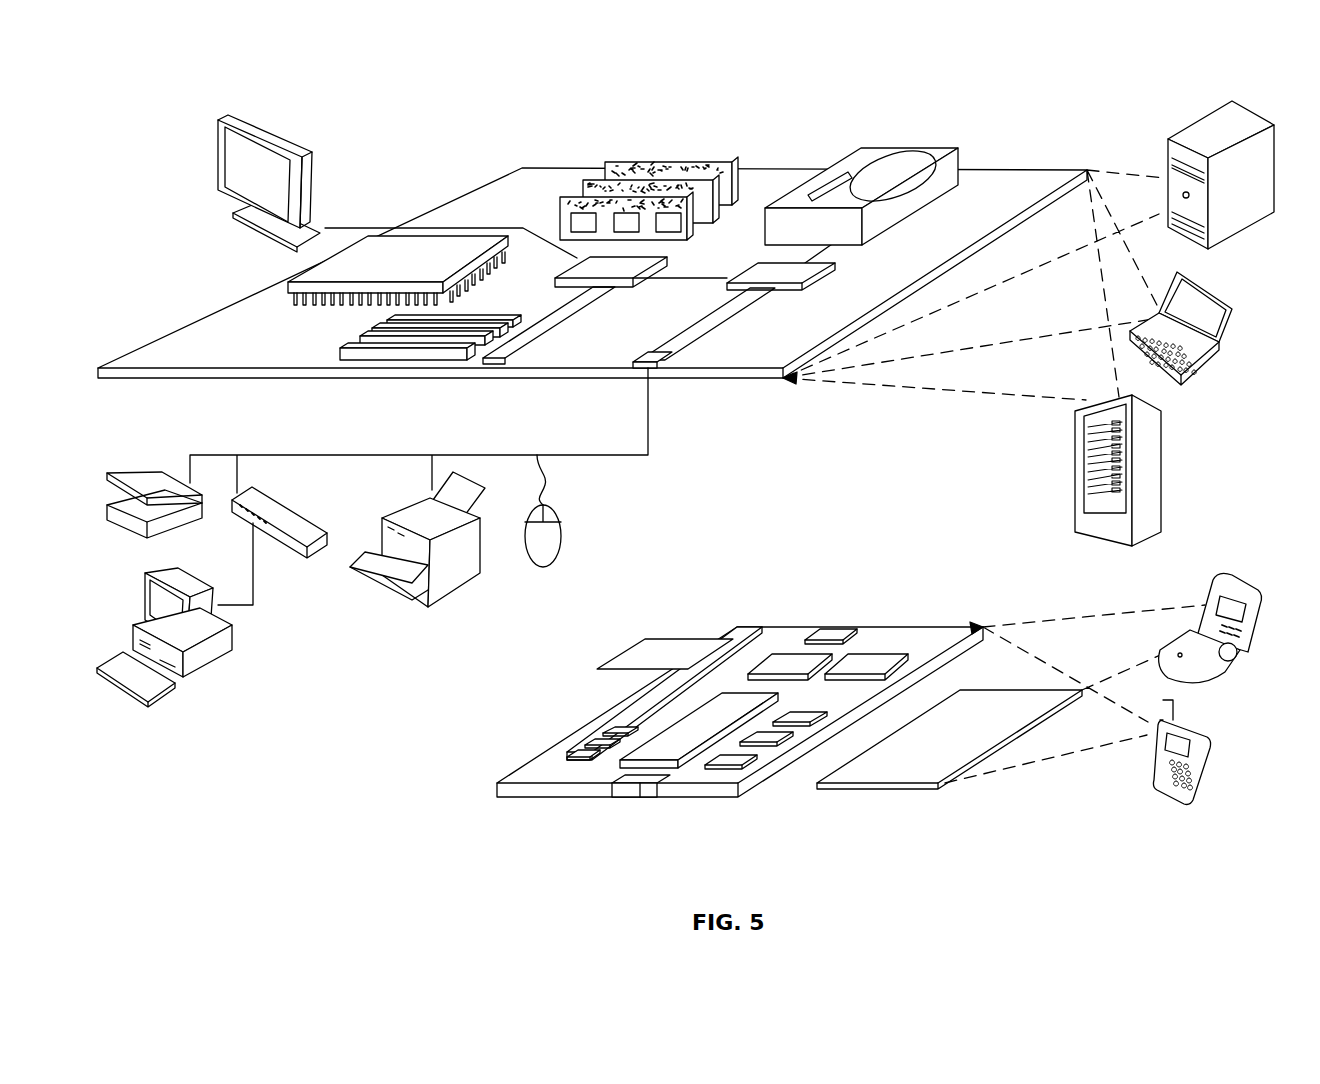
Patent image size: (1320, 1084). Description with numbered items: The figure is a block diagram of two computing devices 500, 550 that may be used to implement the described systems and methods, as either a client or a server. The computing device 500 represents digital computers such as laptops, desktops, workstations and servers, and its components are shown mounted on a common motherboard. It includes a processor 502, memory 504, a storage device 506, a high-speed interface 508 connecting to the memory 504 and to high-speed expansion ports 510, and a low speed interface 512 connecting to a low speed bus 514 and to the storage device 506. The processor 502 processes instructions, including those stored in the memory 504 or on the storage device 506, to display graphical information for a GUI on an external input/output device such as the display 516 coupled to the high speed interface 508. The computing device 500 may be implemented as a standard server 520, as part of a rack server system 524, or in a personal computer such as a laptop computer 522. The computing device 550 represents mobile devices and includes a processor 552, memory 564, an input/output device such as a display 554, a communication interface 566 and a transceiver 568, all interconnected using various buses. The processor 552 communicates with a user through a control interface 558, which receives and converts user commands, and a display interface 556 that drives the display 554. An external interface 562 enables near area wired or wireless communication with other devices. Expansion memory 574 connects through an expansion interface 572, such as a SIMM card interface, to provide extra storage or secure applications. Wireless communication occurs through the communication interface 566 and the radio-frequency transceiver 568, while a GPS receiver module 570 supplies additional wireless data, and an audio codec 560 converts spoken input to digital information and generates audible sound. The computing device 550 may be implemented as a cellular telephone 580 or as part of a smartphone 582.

The computing device 500 is at (415, 138).
The processor 502 is at (290, 283).
The memory 504 is at (620, 165).
The storage device 506 is at (850, 150).
The high-speed interface 508 is at (583, 268).
The high-speed expansion ports 510 is at (357, 345).
The low speed interface 512 is at (765, 268).
The low speed bus 514 is at (655, 374).
The display 516 is at (222, 118).
The standard server 520 is at (1170, 152).
The laptop computer 522 is at (1232, 295).
The rack server system 524 is at (1077, 490).
The computing device 550 is at (465, 800).
The processor 552 is at (668, 752).
The display 554 is at (942, 782).
The display interface 556 is at (748, 762).
The control interface 558 is at (780, 735).
The audio codec 560 is at (798, 717).
The external interface 562 is at (640, 785).
The memory 564 is at (588, 748).
The communication interface 566 is at (790, 665).
The transceiver 568 is at (868, 660).
The GPS receiver module 570 is at (832, 632).
The expansion interface 572 is at (718, 640).
The expansion memory 574 is at (650, 645).
The cellular telephone 580 is at (1215, 582).
The smartphone 582 is at (1150, 758).